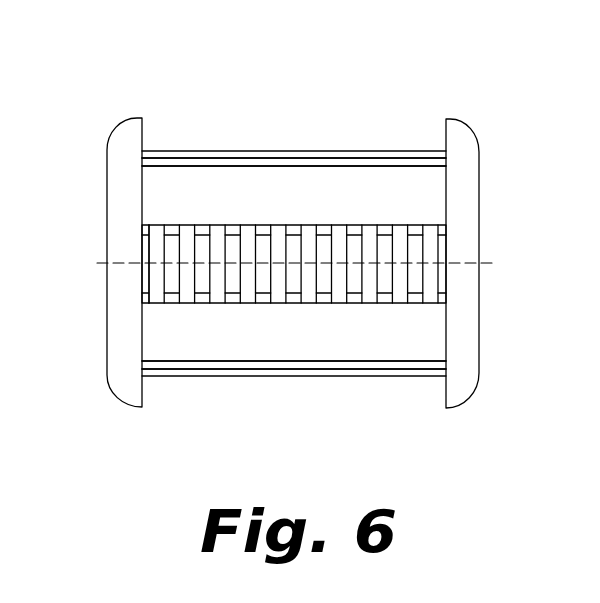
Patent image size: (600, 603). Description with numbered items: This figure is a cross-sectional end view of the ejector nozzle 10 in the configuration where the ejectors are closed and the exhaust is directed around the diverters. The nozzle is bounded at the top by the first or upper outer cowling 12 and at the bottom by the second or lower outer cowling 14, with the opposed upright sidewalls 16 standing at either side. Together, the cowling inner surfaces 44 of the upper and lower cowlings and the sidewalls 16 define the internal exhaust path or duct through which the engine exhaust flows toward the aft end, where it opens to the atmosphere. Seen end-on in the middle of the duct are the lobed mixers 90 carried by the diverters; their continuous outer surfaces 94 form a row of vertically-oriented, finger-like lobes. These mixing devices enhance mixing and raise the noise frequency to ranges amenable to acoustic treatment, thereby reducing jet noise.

The ejector nozzle 10 is at (187, 76).
The first or upper outer cowling 12 is at (223, 151).
The second or lower outer cowling 14 is at (242, 368).
The opposed upright sidewalls 16 is at (113, 336).
The cowling inner surfaces 44 is at (273, 167).
The lobed mixer 90 is at (147, 277).
The outer surface of lobed mixer 94 is at (268, 226).